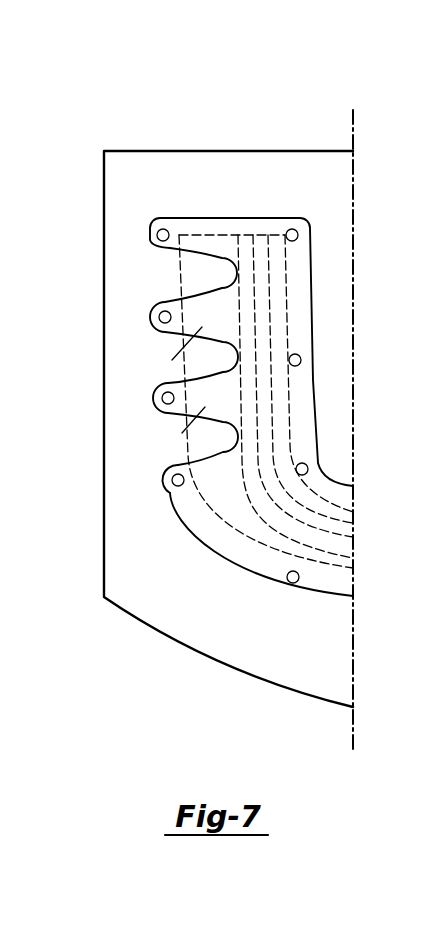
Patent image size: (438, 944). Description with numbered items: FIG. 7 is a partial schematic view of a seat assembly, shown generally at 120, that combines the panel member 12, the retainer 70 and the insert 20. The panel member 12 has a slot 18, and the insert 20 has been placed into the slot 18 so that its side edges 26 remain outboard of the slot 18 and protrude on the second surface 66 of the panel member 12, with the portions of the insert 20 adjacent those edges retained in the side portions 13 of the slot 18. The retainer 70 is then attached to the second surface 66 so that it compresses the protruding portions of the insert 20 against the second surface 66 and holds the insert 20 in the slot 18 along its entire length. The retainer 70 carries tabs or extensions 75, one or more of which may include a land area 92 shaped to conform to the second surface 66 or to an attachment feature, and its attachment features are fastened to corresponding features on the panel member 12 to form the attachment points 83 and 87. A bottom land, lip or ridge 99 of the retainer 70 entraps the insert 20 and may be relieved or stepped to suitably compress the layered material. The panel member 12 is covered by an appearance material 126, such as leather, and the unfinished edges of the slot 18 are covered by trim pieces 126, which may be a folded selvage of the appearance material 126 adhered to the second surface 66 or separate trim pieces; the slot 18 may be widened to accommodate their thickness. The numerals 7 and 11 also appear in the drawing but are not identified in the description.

The vehicle (partial) 7 is at (5, 372).
The dashed outline region 11 is at (262, 235).
The panel member 12 is at (102, 175).
The side portions of slot 13 is at (283, 310).
The slot 18 is at (347, 536).
The insert 20 is at (178, 265).
The side edges of insert 26 is at (193, 282).
The second surface 66 is at (160, 172).
The retainer 70 is at (0, 412).
The extensions (tabs) 75 is at (190, 372).
The attachment point 83 is at (152, 313).
The attachment point 87 is at (308, 470).
The land area 92 is at (166, 416).
The extended land (ridge) 99 is at (325, 582).
The combination of panel member, retainer and insert 120 is at (273, 140).
The appearance material / trim piece 126 is at (285, 262).